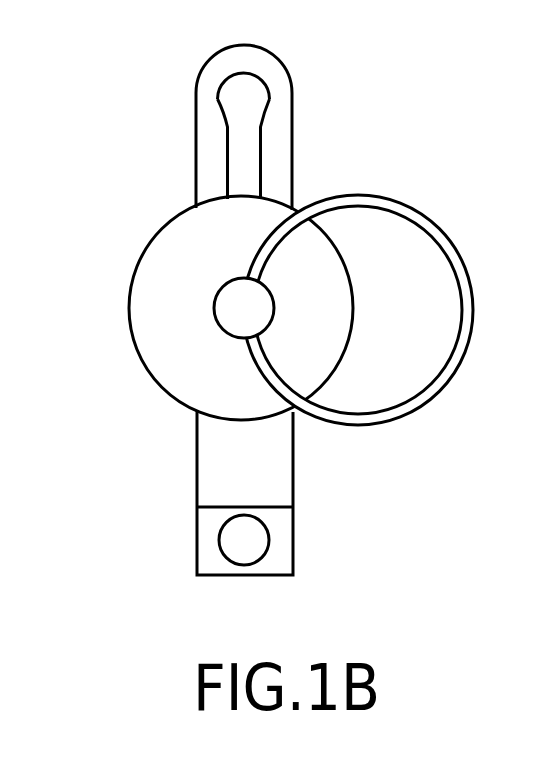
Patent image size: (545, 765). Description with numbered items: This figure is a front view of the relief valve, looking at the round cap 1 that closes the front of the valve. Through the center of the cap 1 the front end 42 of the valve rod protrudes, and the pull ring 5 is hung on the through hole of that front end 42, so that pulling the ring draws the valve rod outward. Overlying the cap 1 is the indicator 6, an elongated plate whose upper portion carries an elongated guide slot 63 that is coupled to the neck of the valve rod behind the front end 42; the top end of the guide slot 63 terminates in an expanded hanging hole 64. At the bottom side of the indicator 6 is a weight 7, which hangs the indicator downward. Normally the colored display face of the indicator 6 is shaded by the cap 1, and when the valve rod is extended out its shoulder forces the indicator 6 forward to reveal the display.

The cap 1 is at (173, 378).
The pull ring 5 is at (458, 260).
The indicator 6 is at (278, 77).
The weight 7 is at (276, 522).
The front end 42 is at (235, 303).
The elongated guide slot 63 is at (245, 165).
The expanded hanging hole 64 is at (252, 100).